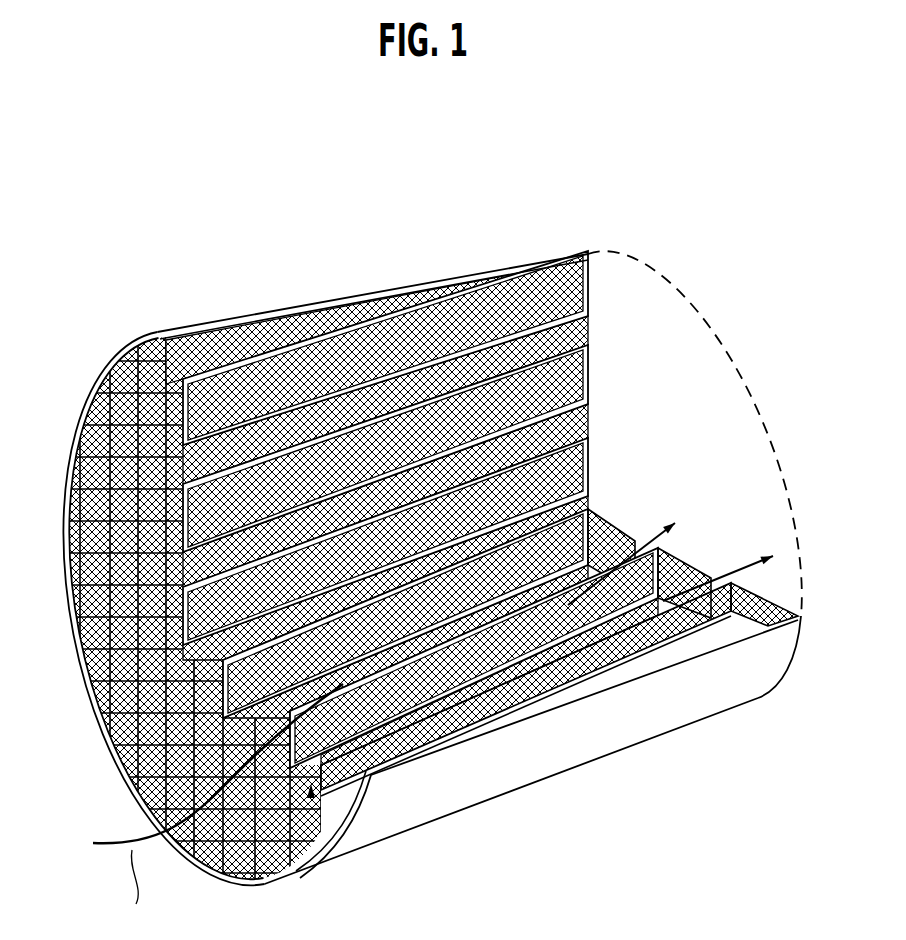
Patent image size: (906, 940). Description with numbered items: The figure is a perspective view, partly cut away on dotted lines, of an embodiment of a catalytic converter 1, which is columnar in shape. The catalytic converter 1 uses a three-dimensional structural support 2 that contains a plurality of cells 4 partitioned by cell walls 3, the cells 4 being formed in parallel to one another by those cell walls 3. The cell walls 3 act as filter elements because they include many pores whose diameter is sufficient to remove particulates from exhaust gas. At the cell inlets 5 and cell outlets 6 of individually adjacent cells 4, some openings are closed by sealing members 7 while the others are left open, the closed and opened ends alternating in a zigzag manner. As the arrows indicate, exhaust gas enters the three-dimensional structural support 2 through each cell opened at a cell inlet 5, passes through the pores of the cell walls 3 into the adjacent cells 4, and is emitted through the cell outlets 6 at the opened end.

The catalytic converter 1 is at (272, 205).
The three-dimensional structural support 2 is at (552, 246).
The cell walls 3 is at (594, 600).
The cells 4 is at (418, 520).
The cell inlets 5 is at (292, 872).
The cell outlets 6 is at (712, 558).
The sealing members 7 is at (106, 738).